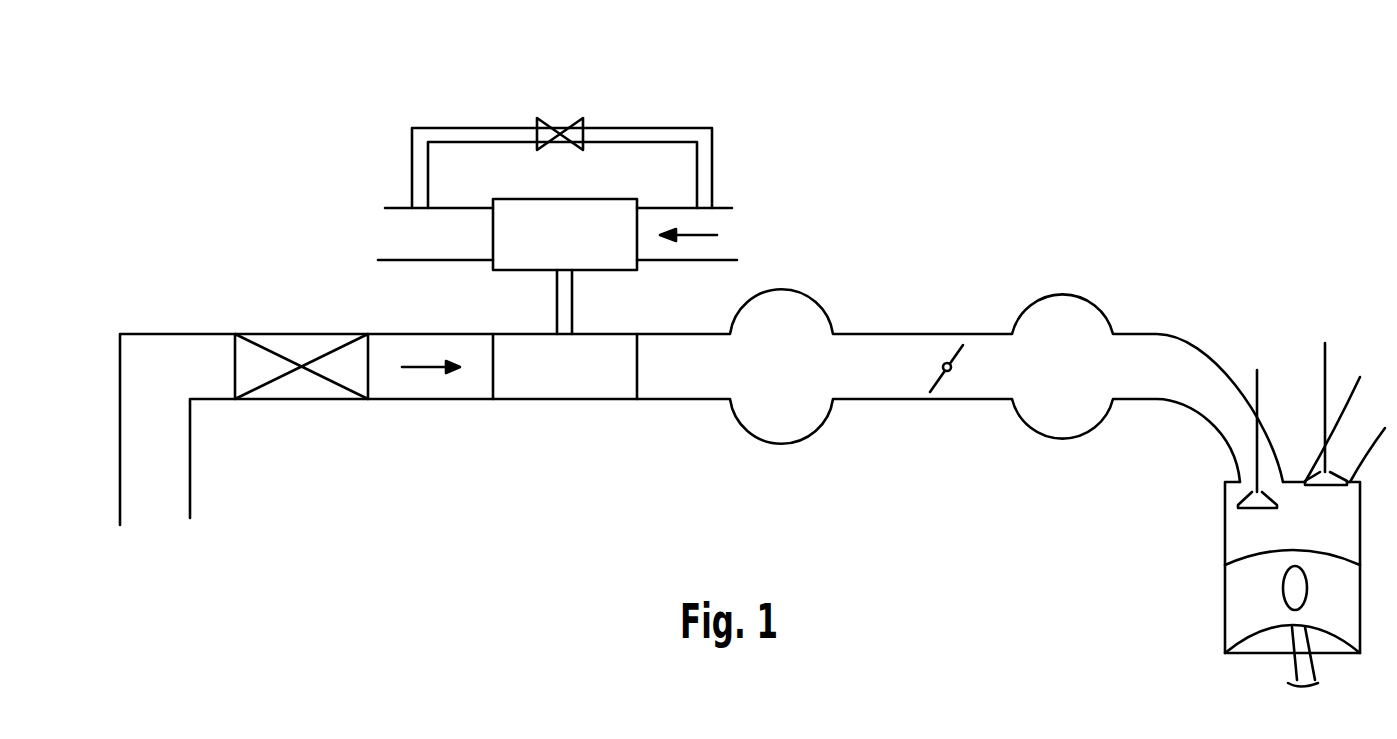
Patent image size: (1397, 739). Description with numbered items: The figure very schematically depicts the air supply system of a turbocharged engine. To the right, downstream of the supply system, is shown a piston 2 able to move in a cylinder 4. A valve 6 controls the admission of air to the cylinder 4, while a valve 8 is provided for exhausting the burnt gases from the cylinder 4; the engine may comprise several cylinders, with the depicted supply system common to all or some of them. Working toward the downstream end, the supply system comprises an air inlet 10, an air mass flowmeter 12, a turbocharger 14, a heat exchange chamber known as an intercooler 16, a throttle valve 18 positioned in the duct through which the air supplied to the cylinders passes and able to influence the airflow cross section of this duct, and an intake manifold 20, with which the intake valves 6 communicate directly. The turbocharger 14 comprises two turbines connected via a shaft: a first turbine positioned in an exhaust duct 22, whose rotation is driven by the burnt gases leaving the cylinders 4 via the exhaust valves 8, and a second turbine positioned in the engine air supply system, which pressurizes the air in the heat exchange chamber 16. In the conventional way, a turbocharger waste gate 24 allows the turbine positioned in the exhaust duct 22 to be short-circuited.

The piston 2 is at (1238, 597).
The cylinder 4 is at (1237, 537).
The valve 6 is at (1262, 385).
The valve 8 is at (1327, 353).
The air inlet 10 is at (152, 453).
The air mass flowmeter 12 is at (303, 352).
The turbocharger 14 is at (573, 298).
The intercooler 16 is at (780, 317).
The throttle valve 18 is at (947, 372).
The intake manifold 20 is at (1053, 310).
The exhaust duct 22 is at (723, 205).
The turbocharger waste gate 24 is at (553, 130).